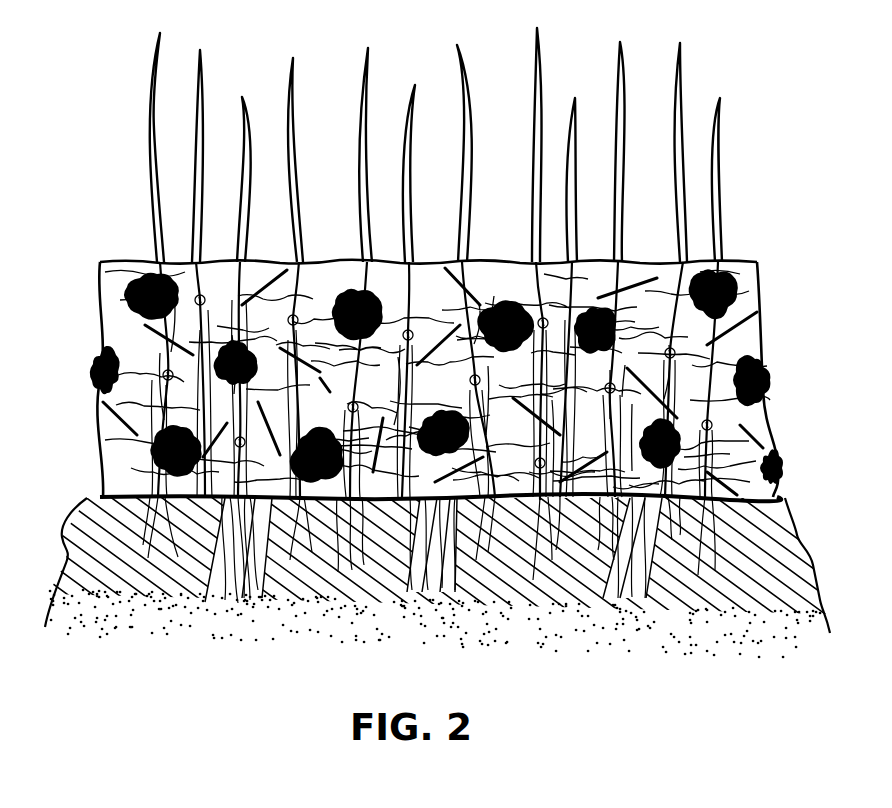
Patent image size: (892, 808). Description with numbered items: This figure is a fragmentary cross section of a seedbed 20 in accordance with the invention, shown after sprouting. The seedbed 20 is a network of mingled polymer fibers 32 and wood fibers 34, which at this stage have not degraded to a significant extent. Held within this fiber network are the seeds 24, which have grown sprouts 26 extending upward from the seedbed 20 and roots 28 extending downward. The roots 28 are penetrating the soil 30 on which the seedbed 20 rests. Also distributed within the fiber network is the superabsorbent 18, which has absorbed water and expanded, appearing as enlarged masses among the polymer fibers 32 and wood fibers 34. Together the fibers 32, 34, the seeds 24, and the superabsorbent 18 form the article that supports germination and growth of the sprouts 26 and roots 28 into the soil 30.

The superabsorbent 18 is at (82, 268).
The seedbed 20 is at (408, 315).
The seeds 24 is at (148, 353).
The sprouts 26 is at (473, 170).
The roots 28 is at (85, 500).
The soil 30 is at (147, 578).
The polymer fibers 32 is at (327, 262).
The wood fibers 34 is at (438, 262).